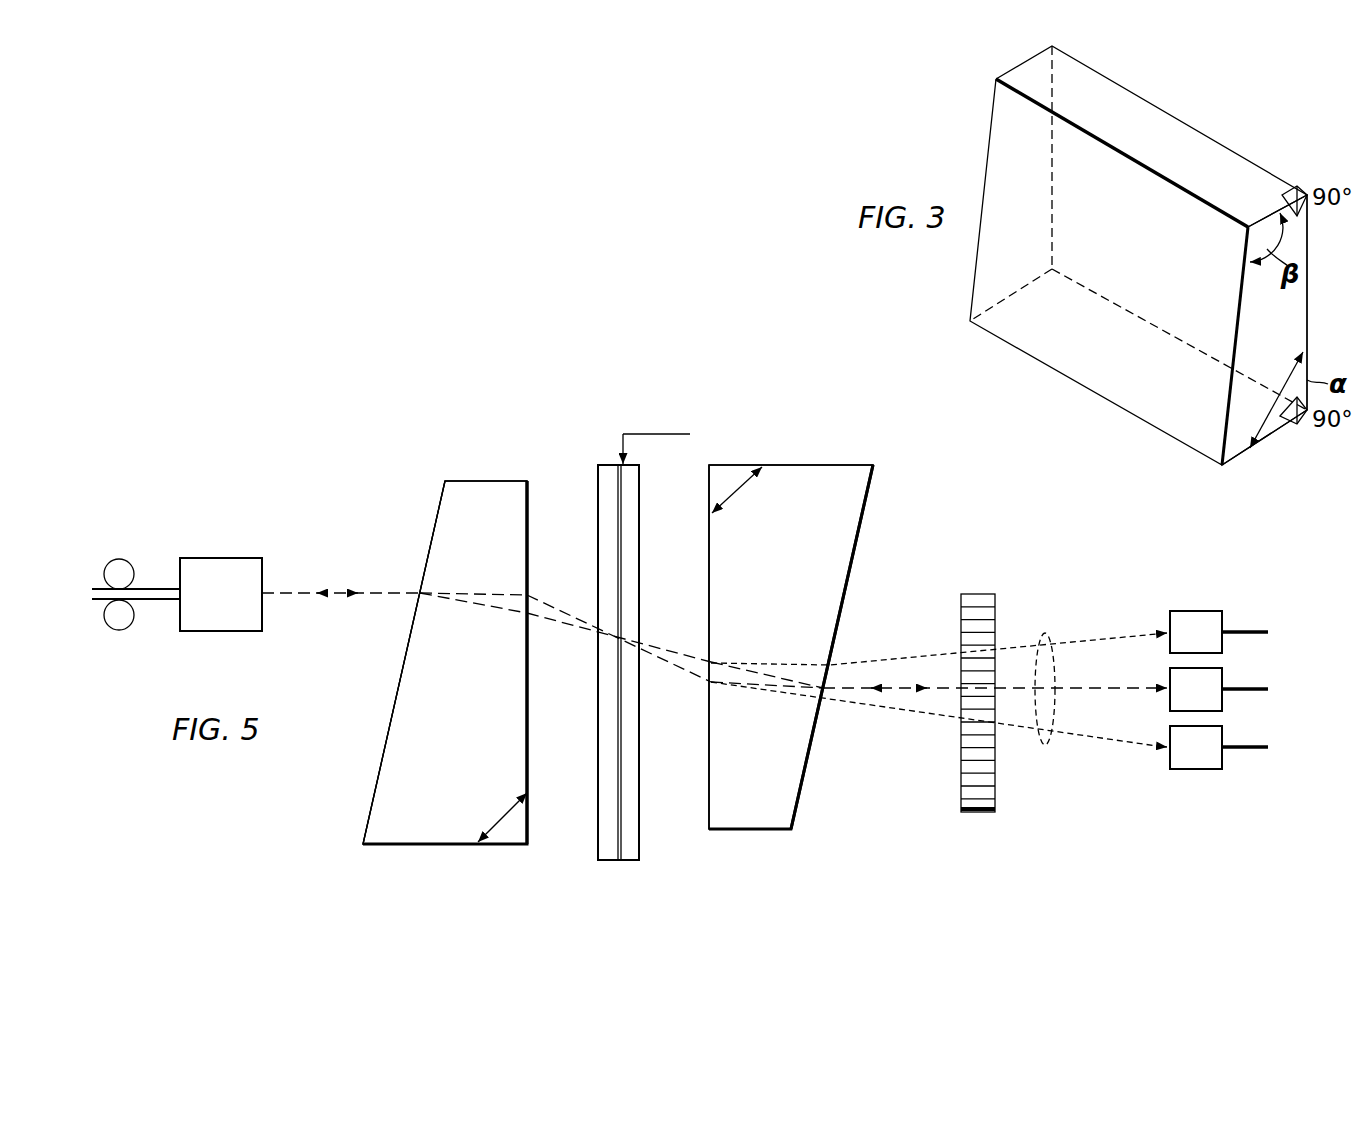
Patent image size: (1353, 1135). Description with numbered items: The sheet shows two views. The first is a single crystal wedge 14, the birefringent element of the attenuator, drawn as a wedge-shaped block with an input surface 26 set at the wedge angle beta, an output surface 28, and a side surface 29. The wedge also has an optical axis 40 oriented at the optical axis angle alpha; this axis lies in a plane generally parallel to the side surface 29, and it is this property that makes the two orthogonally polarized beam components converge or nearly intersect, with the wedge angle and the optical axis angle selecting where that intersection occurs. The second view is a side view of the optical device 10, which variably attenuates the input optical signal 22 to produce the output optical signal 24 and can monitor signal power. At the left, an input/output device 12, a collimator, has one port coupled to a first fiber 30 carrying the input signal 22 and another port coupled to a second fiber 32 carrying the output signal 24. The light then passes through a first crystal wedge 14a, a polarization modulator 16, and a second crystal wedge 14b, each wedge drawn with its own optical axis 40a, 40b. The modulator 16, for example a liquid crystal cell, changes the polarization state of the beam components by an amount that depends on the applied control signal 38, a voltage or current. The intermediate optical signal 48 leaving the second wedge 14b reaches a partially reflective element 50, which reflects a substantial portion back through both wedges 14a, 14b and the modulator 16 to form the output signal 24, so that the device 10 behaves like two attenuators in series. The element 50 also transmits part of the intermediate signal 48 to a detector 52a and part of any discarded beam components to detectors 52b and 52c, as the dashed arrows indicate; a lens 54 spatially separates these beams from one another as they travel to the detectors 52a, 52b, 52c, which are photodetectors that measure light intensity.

In FIG. 5, the optical device 10 is at (364, 460).
In FIG. 5, the input/output device 12 is at (220, 558).
In FIG. 3, the crystal wedge 14 is at (968, 118).
In FIG. 5, the first crystal wedge 14a is at (445, 846).
In FIG. 5, the second crystal wedge 14b is at (752, 832).
In FIG. 5, the polarization modulator 16 is at (643, 830).
In FIG. 5, the input optical signal 22 is at (385, 593).
In FIG. 5, the output optical signal 24 is at (290, 593).
In FIG. 5, the input surface 26 is at (375, 775).
In FIG. 5, the output surface 28 is at (529, 753).
In FIG. 3, the side surface 29 is at (1283, 322).
In FIG. 5, the side surface 29 is at (451, 713).
In FIG. 5, the first fiber 30 is at (167, 600).
In FIG. 5, the second fiber 32 is at (167, 589).
In FIG. 5, the control signal 38 is at (655, 434).
In FIG. 3, the optical axis 40 is at (1286, 382).
In FIG. 5, the first wedge thickness 40a is at (500, 813).
In FIG. 5, the second wedge thickness 40b is at (733, 492).
In FIG. 5, the intermediate optical signal 48 is at (903, 686).
In FIG. 5, the partially reflective element 50 is at (978, 813).
In FIG. 5, the detector 52a is at (1225, 678).
In FIG. 5, the detector 52b is at (1197, 610).
In FIG. 5, the detector 52c is at (1196, 770).
In FIG. 5, the lens 54 is at (1045, 746).